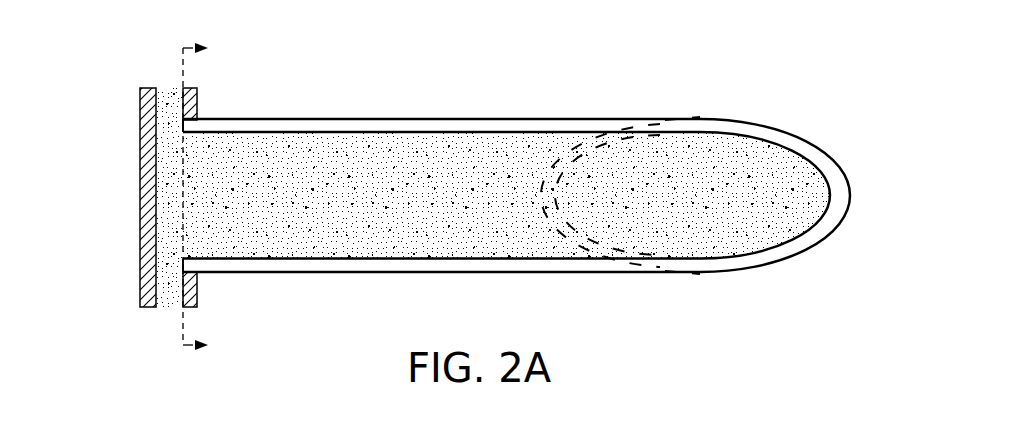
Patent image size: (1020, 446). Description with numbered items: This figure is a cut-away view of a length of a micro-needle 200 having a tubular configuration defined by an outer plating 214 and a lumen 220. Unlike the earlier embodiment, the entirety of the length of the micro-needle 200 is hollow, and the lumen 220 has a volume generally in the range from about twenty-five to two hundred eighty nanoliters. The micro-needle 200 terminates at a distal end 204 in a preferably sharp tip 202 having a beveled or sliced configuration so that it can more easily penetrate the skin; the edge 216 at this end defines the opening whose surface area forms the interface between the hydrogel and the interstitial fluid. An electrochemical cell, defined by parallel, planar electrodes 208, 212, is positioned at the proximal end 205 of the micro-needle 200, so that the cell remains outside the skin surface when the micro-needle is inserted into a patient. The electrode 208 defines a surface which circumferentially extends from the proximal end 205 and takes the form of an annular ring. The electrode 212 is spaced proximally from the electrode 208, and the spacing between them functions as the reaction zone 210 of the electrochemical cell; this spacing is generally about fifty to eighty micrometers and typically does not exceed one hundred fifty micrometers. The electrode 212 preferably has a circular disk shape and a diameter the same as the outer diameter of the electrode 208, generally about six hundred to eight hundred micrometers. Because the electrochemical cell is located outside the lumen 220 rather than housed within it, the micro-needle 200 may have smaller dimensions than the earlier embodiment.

The micro-needle 200 is at (493, 221).
The tip 202 is at (828, 233).
The distal end 204 is at (498, 92).
The proximal end 205 is at (190, 225).
The electrode 208 is at (197, 100).
The reaction zone 210 is at (167, 297).
The electrode 212 is at (140, 167).
The outer plating 214 is at (357, 265).
The edge 216 is at (830, 157).
The lumen 220 is at (570, 169).